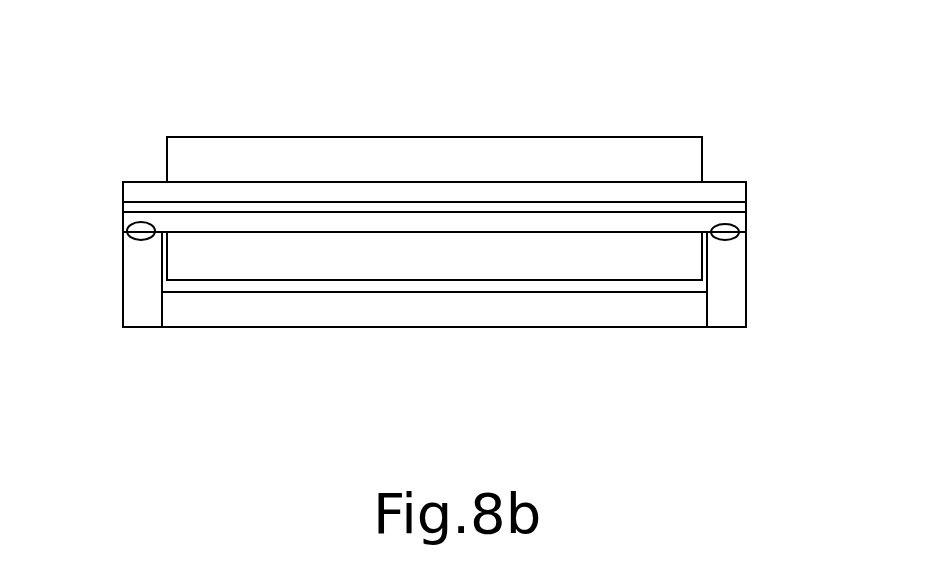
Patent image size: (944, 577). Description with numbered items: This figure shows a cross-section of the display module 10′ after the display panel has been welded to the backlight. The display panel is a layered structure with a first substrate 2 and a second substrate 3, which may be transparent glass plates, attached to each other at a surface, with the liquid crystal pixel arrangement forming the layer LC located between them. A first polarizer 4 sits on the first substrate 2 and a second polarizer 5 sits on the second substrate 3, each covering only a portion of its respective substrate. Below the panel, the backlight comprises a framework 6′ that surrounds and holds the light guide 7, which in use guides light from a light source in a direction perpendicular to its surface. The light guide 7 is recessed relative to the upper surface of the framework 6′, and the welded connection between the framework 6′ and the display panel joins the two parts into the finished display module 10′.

The display module 10′ is at (434, 185).
The first polarizer 4 is at (434, 159).
The first substrate 2 is at (731, 193).
The liquid crystal pixel arrangement layer LC is at (733, 208).
The second substrate 3 is at (738, 217).
The second polarizer 5 is at (434, 256).
The framework 6′ is at (434, 279).
The light guide 7 is at (434, 306).